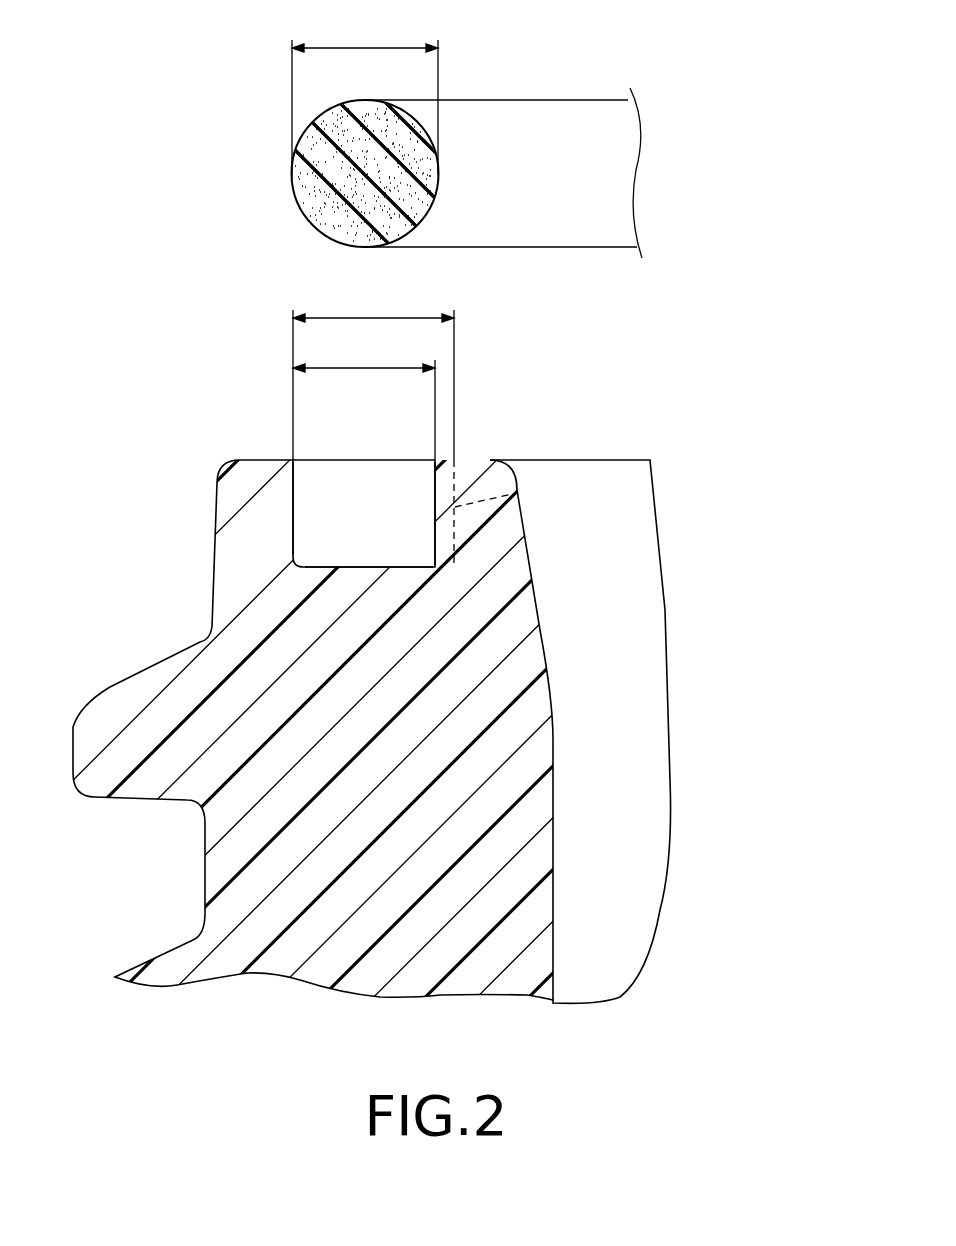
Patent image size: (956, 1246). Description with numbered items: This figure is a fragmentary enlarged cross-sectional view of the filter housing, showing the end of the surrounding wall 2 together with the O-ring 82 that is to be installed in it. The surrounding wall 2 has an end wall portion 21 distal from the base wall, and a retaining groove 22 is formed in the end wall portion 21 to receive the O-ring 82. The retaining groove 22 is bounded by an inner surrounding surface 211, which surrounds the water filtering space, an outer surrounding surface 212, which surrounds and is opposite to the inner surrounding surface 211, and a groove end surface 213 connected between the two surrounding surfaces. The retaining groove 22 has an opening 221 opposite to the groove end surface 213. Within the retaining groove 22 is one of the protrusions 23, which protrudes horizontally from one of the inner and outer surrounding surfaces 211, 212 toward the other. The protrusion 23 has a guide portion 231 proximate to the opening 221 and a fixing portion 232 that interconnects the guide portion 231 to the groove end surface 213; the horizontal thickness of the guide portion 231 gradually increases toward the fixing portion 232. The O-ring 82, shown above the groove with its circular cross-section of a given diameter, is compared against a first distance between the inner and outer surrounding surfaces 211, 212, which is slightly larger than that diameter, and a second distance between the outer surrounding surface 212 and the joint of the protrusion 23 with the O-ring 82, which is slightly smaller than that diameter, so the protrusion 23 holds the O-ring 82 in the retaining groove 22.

The O-ring 82 is at (298, 182).
The surrounding wall 2 is at (478, 725).
The end wall portion 21 is at (217, 587).
The retaining groove 22 is at (308, 553).
The outer surrounding surface 212 is at (290, 512).
The groove end surface 213 is at (400, 572).
The fixing portion 232 is at (443, 530).
The opening 221 is at (362, 475).
The protrusion 23 is at (441, 425).
The guide portion 231 is at (436, 482).
The inner surrounding surface 211 is at (517, 493).